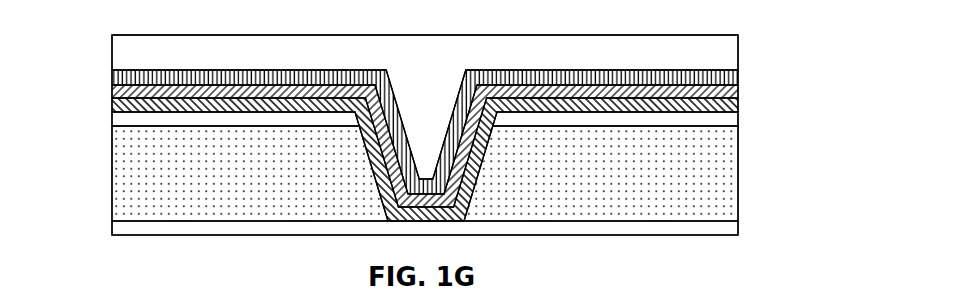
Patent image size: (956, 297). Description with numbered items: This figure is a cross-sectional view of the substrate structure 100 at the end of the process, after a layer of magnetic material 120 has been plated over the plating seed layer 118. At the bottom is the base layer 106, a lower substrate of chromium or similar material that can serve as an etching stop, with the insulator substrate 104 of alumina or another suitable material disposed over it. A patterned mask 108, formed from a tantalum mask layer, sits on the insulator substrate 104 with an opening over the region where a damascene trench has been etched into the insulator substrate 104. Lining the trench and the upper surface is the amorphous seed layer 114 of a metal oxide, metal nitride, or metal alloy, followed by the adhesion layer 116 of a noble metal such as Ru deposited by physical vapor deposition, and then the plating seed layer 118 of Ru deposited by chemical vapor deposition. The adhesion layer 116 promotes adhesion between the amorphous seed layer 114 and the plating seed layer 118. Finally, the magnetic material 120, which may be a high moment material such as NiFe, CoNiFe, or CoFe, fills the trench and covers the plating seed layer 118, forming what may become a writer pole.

The substrate structure 100 is at (112, 30).
The insulator substrate 104 is at (738, 175).
The base layer 106 is at (738, 227).
The patterned mask 108 is at (738, 122).
The amorphous seed layer 114 is at (738, 105).
The adhesion layer 116 is at (738, 92).
The plating seed layer 118 is at (738, 78).
The magnetic material 120 is at (738, 53).